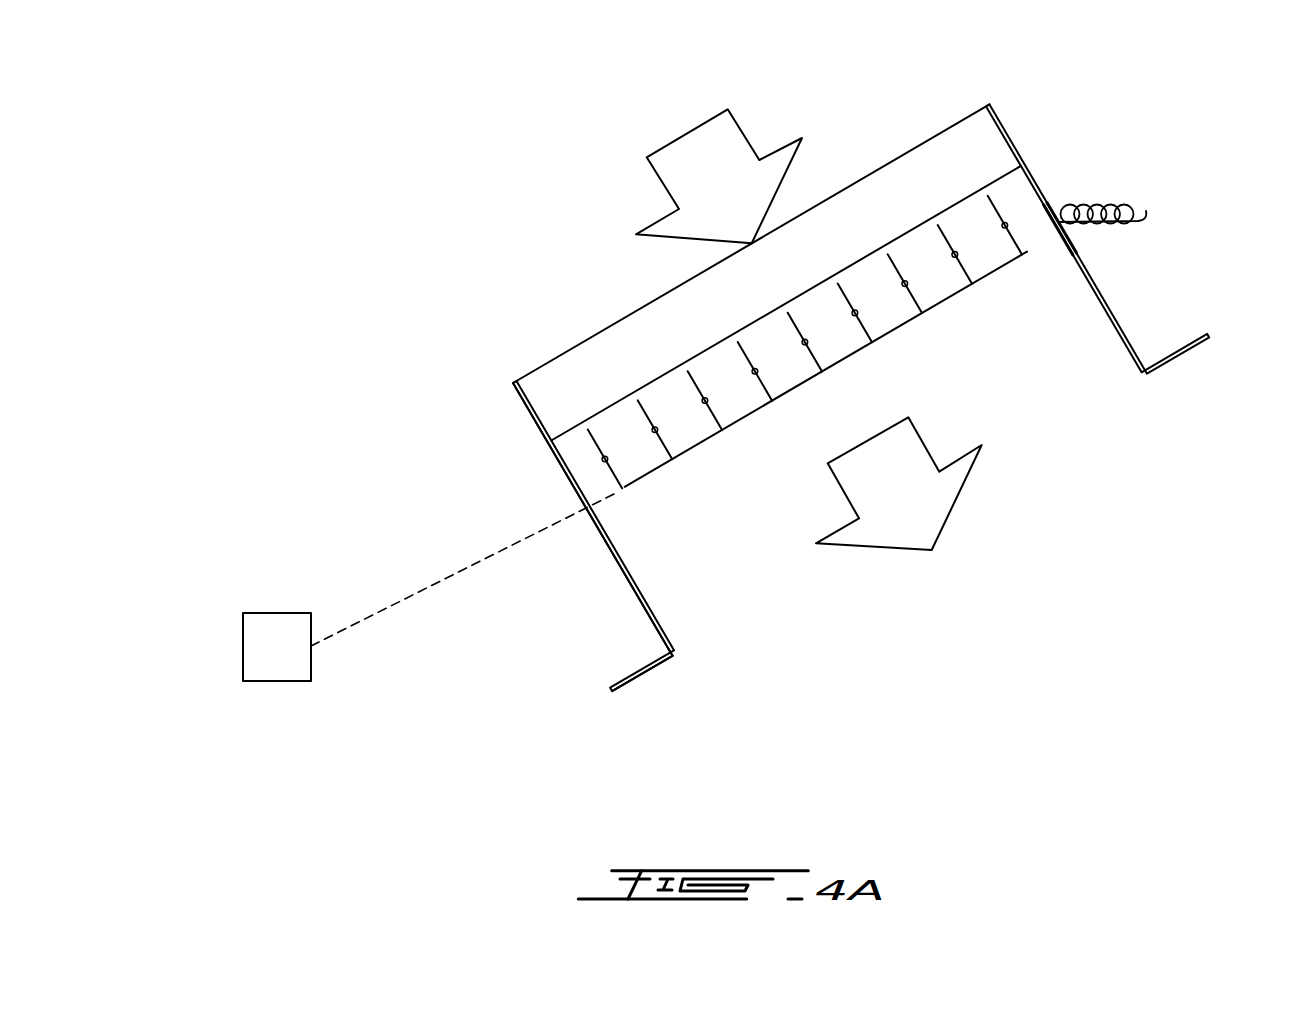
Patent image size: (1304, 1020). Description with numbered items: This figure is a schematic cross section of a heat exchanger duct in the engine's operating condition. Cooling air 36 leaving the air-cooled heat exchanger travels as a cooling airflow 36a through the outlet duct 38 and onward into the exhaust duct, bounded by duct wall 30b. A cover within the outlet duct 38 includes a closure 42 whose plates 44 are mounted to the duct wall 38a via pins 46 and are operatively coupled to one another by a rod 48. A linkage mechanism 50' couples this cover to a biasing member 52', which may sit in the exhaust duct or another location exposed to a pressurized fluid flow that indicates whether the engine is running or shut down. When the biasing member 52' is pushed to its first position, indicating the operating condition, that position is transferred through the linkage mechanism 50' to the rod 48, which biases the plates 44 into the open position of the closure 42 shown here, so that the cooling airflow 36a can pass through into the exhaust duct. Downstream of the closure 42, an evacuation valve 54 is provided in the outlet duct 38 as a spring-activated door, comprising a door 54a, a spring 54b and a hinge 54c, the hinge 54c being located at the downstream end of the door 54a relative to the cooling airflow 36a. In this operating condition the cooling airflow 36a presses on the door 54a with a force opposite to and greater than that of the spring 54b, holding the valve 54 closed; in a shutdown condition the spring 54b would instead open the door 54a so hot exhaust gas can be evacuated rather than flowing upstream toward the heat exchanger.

The cooling air 36 is at (990, 137).
The cooling airflow 36a is at (704, 183).
The outlet duct 38 is at (634, 632).
The duct wall 38a is at (625, 575).
The duct wall 30b is at (623, 690).
The closure 42 is at (1048, 167).
The plates 44 is at (597, 450).
The pins 46 is at (601, 462).
The rod 48 is at (950, 298).
The linkage mechanism 50' is at (464, 569).
The biasing member 52' is at (230, 647).
The evacuation valve 54 is at (1171, 188).
The door 54a is at (1070, 239).
The spring 54b is at (1142, 208).
The hinge 54c is at (1075, 253).